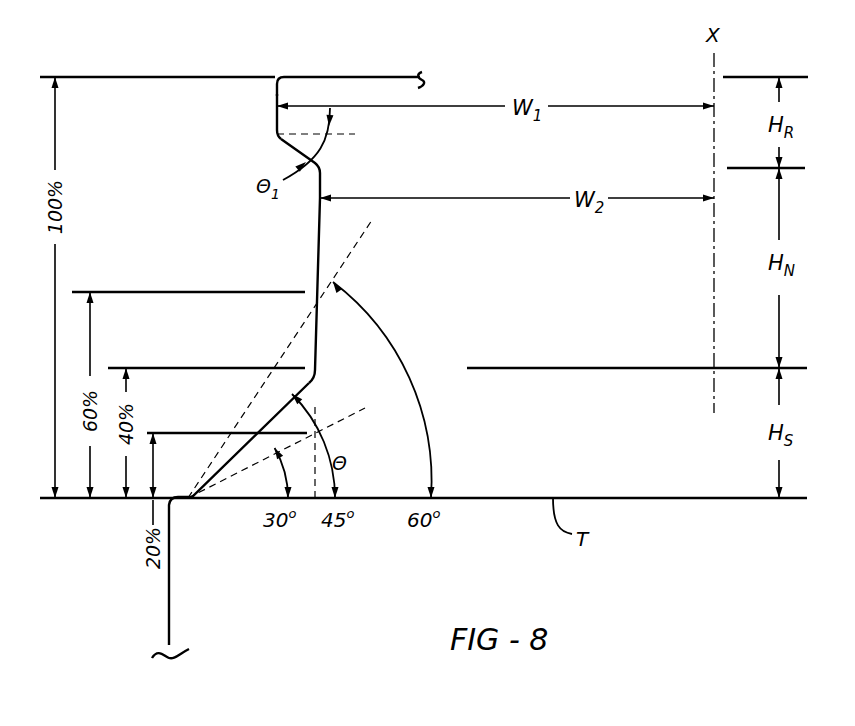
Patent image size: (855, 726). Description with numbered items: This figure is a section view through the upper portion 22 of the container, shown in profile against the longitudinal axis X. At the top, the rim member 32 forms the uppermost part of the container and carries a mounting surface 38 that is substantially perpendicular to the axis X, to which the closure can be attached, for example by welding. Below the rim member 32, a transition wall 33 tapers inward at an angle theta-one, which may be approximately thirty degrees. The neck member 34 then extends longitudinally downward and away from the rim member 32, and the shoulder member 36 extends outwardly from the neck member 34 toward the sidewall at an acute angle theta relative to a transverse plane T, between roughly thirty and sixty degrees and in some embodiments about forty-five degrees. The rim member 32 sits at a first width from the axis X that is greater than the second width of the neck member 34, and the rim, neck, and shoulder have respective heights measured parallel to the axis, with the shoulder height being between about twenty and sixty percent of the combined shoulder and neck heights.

The upper portion 22 is at (425, 255).
The rim member 32 is at (277, 94).
The transition wall 33 is at (283, 140).
The neck member 34 is at (318, 240).
The shoulder member 36 is at (265, 420).
The mounting surface 38 is at (368, 77).